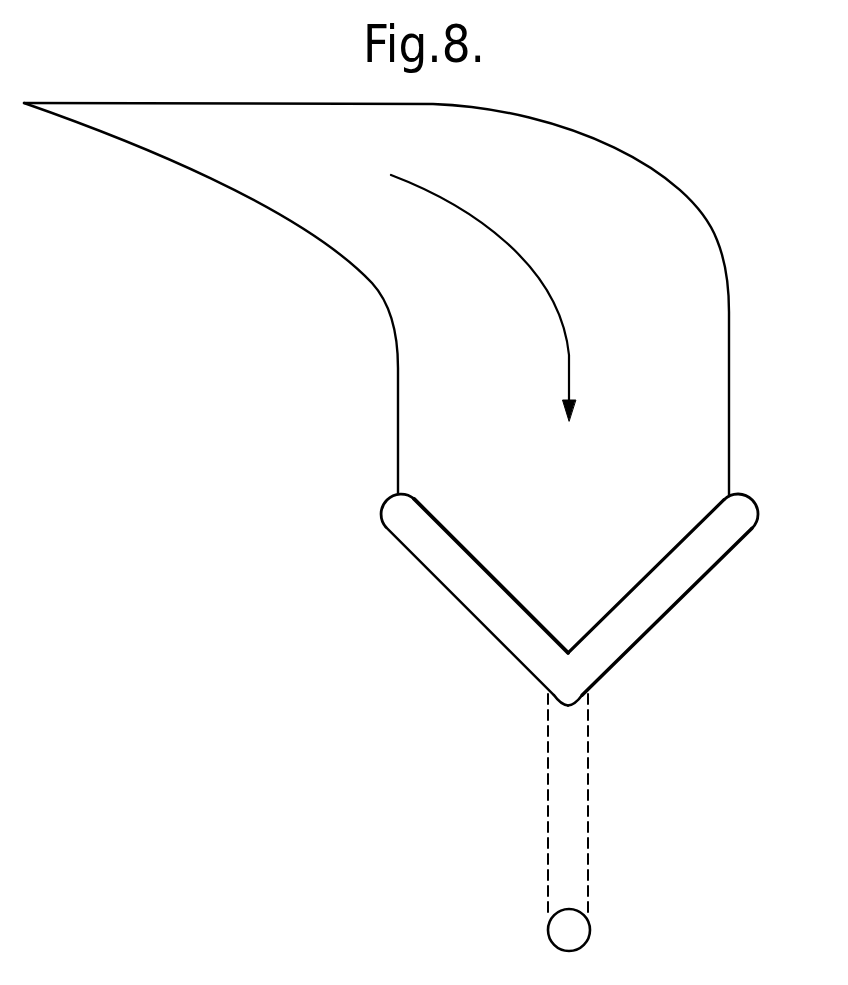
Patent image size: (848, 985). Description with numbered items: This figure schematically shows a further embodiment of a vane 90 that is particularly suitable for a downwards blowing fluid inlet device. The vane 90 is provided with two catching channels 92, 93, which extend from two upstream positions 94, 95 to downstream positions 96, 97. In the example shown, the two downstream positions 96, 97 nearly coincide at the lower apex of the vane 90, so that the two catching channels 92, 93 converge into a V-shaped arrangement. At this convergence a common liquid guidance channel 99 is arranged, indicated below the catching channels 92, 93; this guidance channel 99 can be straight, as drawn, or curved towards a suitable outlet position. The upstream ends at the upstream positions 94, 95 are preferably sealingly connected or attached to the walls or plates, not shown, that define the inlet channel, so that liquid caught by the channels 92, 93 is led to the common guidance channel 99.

The vane 90 is at (569, 130).
The catching channel 92 is at (468, 612).
The catching channel 93 is at (668, 613).
The upstream position 94 is at (383, 505).
The upstream position 95 is at (750, 508).
The downstream position 96 is at (547, 693).
The downstream position 97 is at (592, 695).
The common liquid guidance channel 99 is at (574, 826).